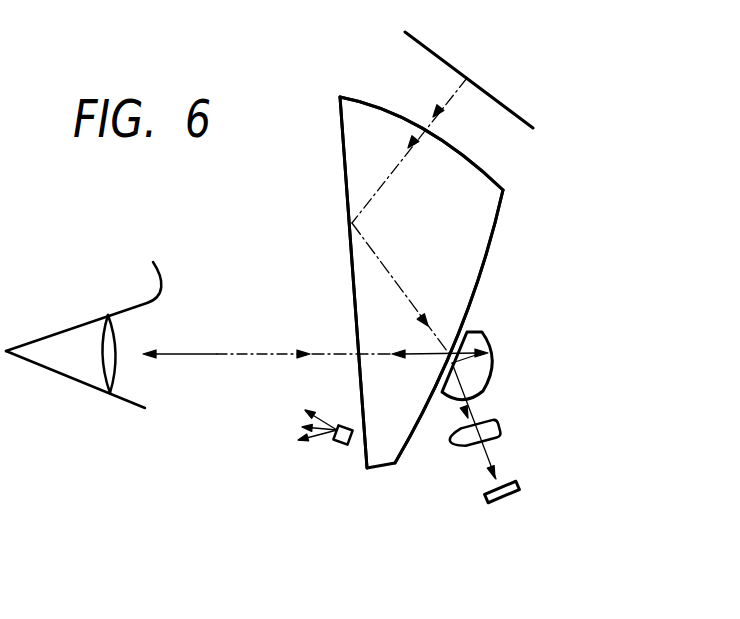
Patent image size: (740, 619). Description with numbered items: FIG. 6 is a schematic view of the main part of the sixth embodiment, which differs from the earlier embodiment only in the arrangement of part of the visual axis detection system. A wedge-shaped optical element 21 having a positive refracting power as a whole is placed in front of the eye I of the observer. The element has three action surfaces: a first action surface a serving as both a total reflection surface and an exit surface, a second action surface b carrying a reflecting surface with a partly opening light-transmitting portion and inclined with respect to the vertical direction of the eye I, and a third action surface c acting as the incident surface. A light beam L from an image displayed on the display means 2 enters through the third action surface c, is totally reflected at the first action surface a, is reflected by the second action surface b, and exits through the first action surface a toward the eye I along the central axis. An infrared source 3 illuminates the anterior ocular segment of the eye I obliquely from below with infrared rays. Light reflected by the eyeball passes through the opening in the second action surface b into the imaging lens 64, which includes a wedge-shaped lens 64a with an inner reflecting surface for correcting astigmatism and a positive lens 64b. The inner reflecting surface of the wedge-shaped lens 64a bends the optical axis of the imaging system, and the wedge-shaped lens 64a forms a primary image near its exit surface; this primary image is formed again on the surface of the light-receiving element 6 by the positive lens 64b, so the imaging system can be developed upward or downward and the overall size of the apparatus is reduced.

The display means 2 is at (513, 110).
The optical element 21 is at (358, 128).
The first action surface a is at (353, 313).
The second action surface b is at (478, 293).
The third action surface c is at (460, 153).
The light beam L is at (383, 180).
The eye I is at (88, 387).
The infrared source 3 is at (340, 447).
The imaging lens 64 is at (530, 405).
The wedge-shaped lens 64a is at (481, 372).
The positive lens 64b is at (510, 427).
The light-receiving element 6 is at (520, 485).